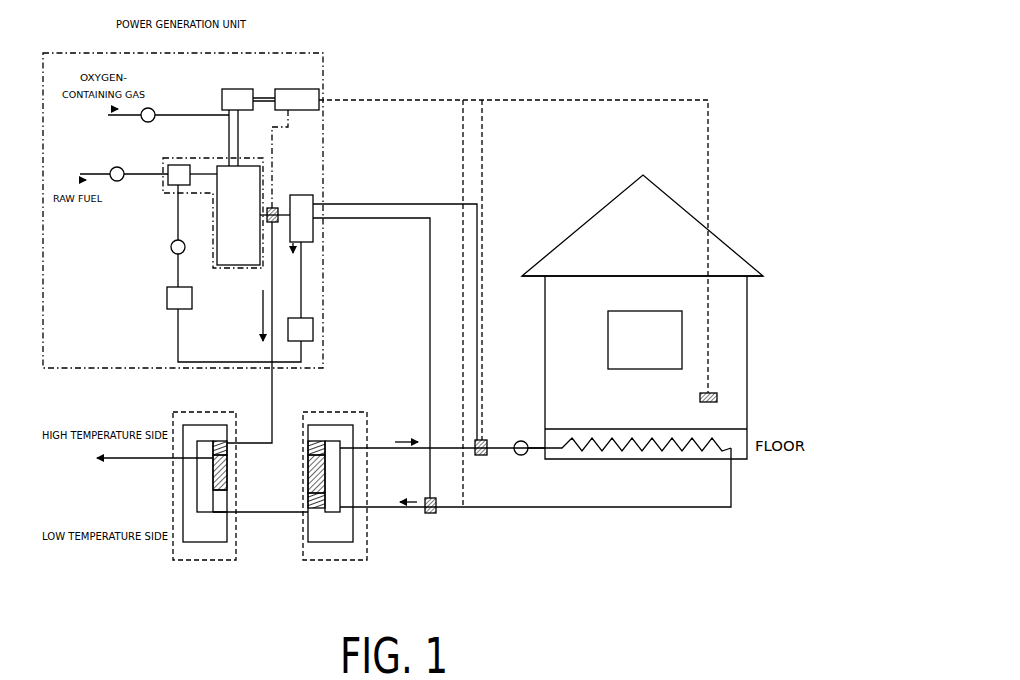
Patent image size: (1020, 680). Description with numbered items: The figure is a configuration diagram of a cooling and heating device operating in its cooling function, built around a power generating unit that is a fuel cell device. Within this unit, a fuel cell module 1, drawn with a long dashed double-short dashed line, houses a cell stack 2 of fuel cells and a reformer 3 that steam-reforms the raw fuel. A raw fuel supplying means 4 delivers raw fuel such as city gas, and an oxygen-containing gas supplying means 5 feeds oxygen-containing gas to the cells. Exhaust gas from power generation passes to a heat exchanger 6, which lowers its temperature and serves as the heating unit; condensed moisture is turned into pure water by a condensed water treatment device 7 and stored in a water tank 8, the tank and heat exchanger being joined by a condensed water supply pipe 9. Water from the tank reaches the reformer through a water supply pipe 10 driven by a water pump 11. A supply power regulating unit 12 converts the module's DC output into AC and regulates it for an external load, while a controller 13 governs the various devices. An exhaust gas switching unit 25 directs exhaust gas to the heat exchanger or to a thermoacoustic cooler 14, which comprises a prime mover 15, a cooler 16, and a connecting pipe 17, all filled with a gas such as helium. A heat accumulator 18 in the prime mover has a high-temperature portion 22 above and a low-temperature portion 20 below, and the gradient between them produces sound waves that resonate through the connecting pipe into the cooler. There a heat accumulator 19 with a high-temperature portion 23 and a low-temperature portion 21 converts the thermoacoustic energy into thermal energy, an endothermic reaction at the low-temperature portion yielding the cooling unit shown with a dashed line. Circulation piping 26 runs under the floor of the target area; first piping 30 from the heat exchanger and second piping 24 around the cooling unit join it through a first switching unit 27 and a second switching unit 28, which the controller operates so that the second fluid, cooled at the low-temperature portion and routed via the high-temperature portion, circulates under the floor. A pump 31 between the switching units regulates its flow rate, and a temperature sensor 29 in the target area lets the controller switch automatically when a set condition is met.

The fuel cell module 1 is at (217, 269).
The cell stack 2 is at (236, 257).
The reformer 3 is at (184, 182).
The raw fuel supplying means 4 is at (119, 181).
The oxygen-containing gas supplying means 5 is at (153, 109).
The heat exchanger 6 is at (303, 241).
The condensed water treatment device 7 is at (308, 327).
The water tank 8 is at (167, 300).
The condensed water supply pipe 9 is at (178, 342).
The water supply pipe 10 is at (176, 230).
The water pump 11 is at (171, 249).
The supply power regulating unit 12 is at (231, 100).
The controller 13 is at (304, 100).
The thermoacoustic cooler 14 is at (283, 496).
The prime mover 15 is at (216, 480).
The cooler 16 is at (334, 475).
The connecting pipe 17 is at (277, 534).
The heat accumulator 18 is at (226, 486).
The heat accumulator 19 is at (310, 478).
The low-temperature portion 20 is at (222, 515).
The low-temperature portion 21 is at (325, 514).
The high-temperature portion 22 is at (220, 440).
The high-temperature portion 23 is at (318, 440).
The second piping 24 is at (377, 446).
The exhaust gas switching unit 25 is at (275, 208).
The circulation piping 26 is at (542, 508).
The first switching unit 27 is at (481, 456).
The second switching unit 28 is at (432, 514).
The temperature sensor 29 is at (717, 398).
The first piping 30 is at (430, 273).
The pump 31 is at (519, 441).